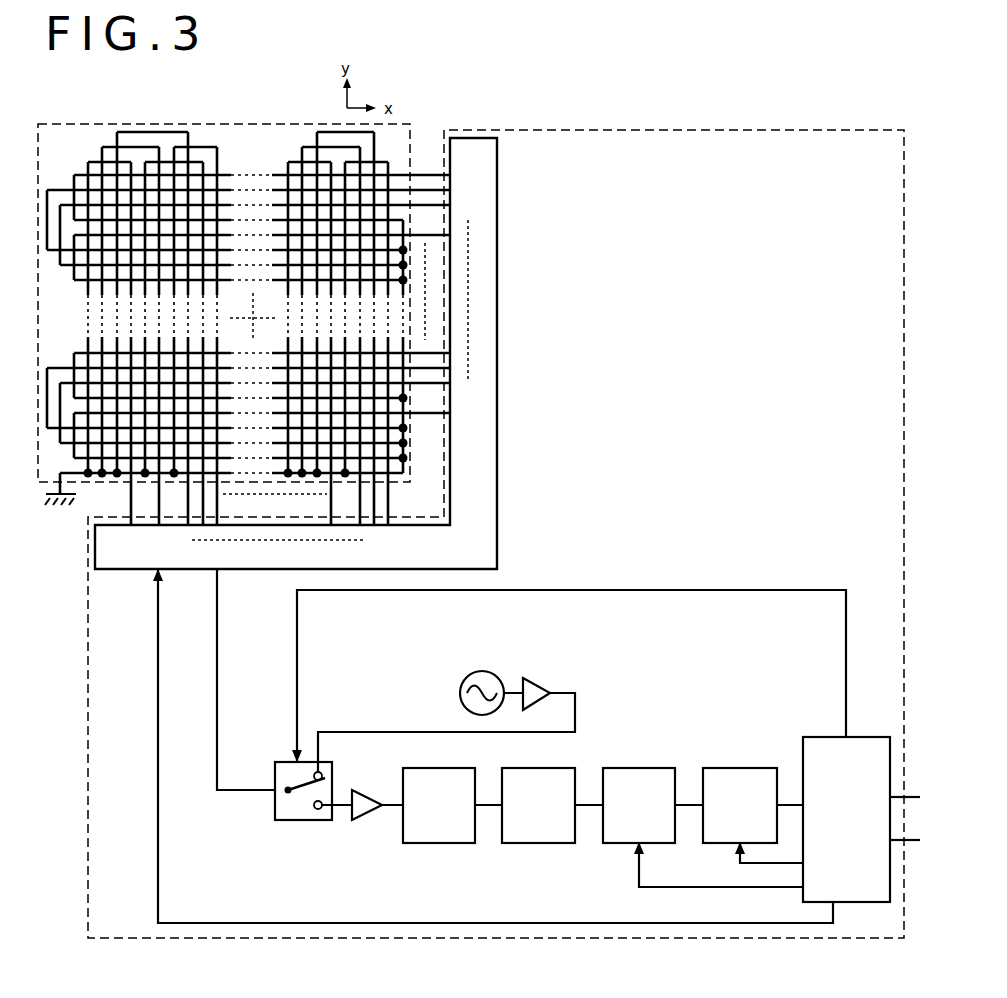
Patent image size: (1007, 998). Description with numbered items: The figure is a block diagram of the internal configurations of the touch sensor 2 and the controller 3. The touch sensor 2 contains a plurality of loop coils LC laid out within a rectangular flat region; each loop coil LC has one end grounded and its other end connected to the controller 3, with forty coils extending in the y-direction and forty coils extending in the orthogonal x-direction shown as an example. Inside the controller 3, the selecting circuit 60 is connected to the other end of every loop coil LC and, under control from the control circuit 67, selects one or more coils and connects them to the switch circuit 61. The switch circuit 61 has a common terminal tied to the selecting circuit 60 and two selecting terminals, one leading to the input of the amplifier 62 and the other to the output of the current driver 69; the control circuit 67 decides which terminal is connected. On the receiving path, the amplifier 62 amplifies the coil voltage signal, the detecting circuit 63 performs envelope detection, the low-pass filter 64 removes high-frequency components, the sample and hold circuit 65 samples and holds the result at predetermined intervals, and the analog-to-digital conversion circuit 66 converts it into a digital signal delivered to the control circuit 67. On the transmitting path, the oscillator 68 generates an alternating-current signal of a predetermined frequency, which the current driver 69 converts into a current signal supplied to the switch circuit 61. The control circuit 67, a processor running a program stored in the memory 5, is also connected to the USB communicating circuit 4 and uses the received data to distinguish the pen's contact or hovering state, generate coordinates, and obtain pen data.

The touch sensor 2 is at (250, 124).
The loop coil LC is at (172, 124).
The controller 3 is at (497, 940).
The selecting circuit 60 is at (497, 302).
The switch circuit 61 is at (305, 822).
The amplifier 62 is at (373, 820).
The detecting circuit 63 is at (441, 845).
The low-pass filter 64 is at (540, 845).
The sample and hold circuit 65 is at (640, 766).
The analog-to-digital conversion circuit 66 is at (740, 766).
The control circuit 67 is at (822, 736).
The oscillator 68 is at (482, 671).
The current driver 69 is at (536, 678).
The USB communicating circuit 4 is at (915, 799).
The memory 5 is at (915, 843).